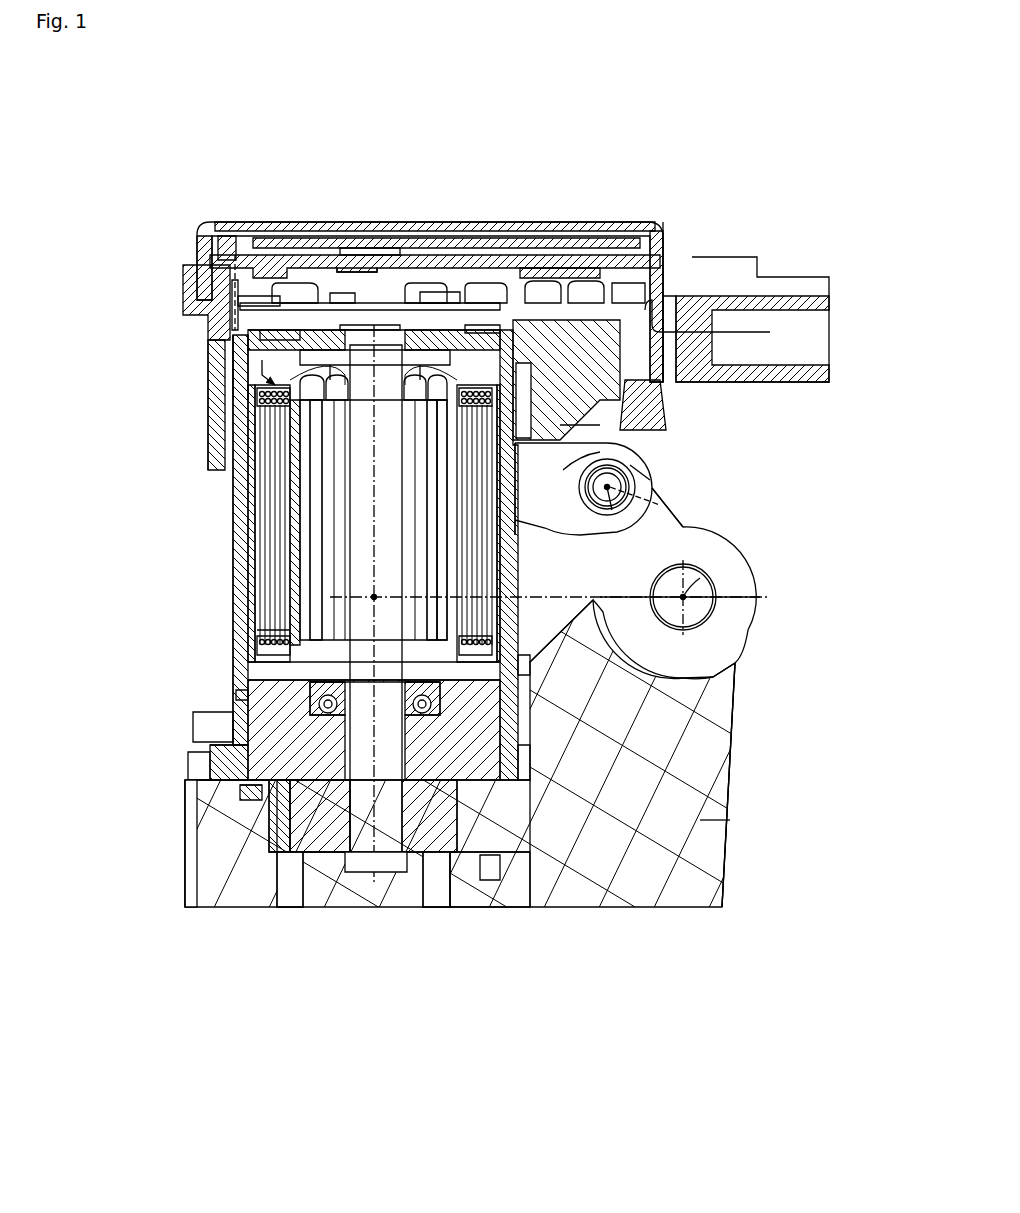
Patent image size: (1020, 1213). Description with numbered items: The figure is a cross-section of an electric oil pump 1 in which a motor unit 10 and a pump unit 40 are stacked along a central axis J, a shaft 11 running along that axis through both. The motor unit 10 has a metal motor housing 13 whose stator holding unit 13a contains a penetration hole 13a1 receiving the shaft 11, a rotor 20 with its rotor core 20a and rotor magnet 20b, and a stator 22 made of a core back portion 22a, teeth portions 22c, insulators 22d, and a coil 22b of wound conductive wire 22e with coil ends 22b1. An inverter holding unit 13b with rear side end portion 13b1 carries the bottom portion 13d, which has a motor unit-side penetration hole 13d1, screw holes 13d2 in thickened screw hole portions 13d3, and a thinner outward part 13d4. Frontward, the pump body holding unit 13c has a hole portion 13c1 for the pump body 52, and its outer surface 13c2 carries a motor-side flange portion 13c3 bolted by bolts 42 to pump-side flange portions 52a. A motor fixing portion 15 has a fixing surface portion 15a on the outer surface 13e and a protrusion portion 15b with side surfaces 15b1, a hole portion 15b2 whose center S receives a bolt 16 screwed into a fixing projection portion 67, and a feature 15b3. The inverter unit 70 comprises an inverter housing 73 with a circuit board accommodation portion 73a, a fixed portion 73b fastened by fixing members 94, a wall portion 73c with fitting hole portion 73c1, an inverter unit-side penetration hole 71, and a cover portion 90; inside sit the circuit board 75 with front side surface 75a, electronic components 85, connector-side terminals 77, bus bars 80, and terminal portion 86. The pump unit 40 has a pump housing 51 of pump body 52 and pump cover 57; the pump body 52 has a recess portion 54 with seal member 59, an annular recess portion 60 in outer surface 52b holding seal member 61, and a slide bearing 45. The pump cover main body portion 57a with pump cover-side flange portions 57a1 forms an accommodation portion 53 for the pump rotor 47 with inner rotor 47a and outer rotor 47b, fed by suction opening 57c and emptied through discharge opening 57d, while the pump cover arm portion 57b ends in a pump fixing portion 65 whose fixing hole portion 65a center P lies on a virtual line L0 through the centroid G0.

The electric oil pump 1 is at (726, 208).
The motor unit 10 is at (126, 560).
The shaft 11 is at (374, 830).
The motor housing 13 is at (230, 590).
The stator holding unit 13a is at (248, 663).
The penetration hole 13a1 is at (248, 680).
The inverter holding unit 13b is at (100, 325).
The rear side end portion 13b1 is at (250, 340).
The pump body holding unit 13c is at (240, 735).
The hole portion 13c1 is at (235, 760).
The outer surface 13c2 is at (236, 695).
The motor-side flange portion 13c3 is at (195, 775).
The bottom portion 13d is at (240, 350).
The motor unit-side penetration hole 13d1 is at (390, 325).
The screw hole 13d2 is at (236, 270).
The screw hole portion 13d3 is at (282, 336).
The outward part 13d4 is at (480, 335).
The outer surface 13e is at (522, 668).
The motor fixing portion 15 is at (655, 460).
The fixing surface portion 15a is at (580, 410).
The protrusion portion 15b is at (570, 535).
The side surfaces 15b1 is at (572, 470).
The hole portion 15b2 is at (645, 466).
The lever arm third portion 15b3 is at (590, 425).
The bolt 16 is at (640, 480).
The rotor 20 is at (480, 617).
The rotor core 20a is at (420, 548).
The rotor magnet 20b is at (445, 587).
The stator 22 is at (230, 540).
The core back portion 22a is at (252, 560).
The coil 22b is at (270, 378).
The coil ends 22b1 is at (445, 378).
The teeth portions 22c is at (288, 520).
The insulators 22d is at (270, 615).
The conductive wire 22e is at (262, 470).
The pump unit 40 is at (124, 845).
The bolt 42 is at (215, 722).
The slide bearing 45 is at (482, 872).
The pump rotor 47 is at (300, 800).
The inner rotor 47a is at (320, 850).
The outer rotor 47b is at (280, 840).
The pump housing 51 is at (738, 787).
The pump body 52 is at (565, 840).
The pump-side flange portions 52a is at (245, 793).
The outer surface 52b is at (550, 750).
The accommodation portion 53 is at (525, 852).
The recess portion 54 is at (702, 832).
The pump cover 57 is at (200, 905).
The pump cover main body portion 57a is at (510, 900).
The pump cover-side flange portions 57a1 is at (205, 855).
The pump cover arm portion 57b is at (705, 810).
The suction opening 57c is at (285, 890).
The discharge opening 57d is at (440, 890).
The seal member 59 is at (258, 802).
The recess portion 60 is at (530, 720).
The seal member 61 is at (515, 690).
The pump fixing portion 65 is at (745, 625).
The fixing hole portion 65a is at (702, 575).
The fixing projection portion 67 is at (665, 517).
The inverter unit 70 is at (170, 224).
The inverter unit-side penetration hole 71 is at (362, 250).
The inverter housing 73 is at (168, 282).
The circuit board accommodation portion 73a is at (410, 254).
The fixed portion 73b is at (352, 268).
The wall portion 73c is at (218, 440).
The fitting hole portion 73c1 is at (215, 420).
The circuit board 75 is at (290, 303).
The front side surface 75a is at (440, 292).
The connector-side terminals 77 is at (225, 236).
The bus bars 80 is at (238, 300).
The electronic components 85 is at (540, 281).
The terminal portion 86 is at (655, 262).
The cover portion 90 is at (520, 345).
The fixing members 94 is at (318, 303).
The centroid G0 is at (550, 604).
The central axis J is at (380, 885).
The center S is at (662, 505).
The center P is at (688, 597).
The virtual line L0 is at (722, 600).